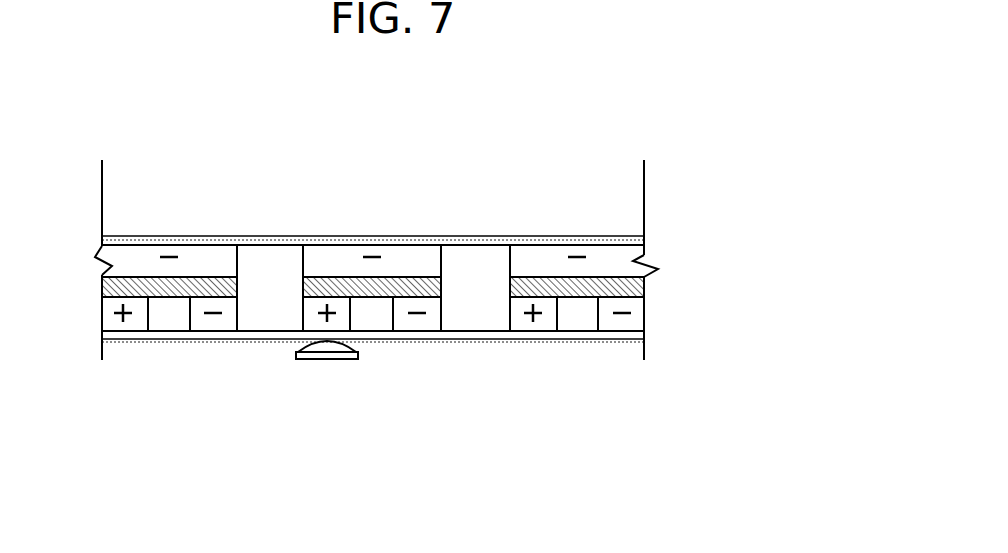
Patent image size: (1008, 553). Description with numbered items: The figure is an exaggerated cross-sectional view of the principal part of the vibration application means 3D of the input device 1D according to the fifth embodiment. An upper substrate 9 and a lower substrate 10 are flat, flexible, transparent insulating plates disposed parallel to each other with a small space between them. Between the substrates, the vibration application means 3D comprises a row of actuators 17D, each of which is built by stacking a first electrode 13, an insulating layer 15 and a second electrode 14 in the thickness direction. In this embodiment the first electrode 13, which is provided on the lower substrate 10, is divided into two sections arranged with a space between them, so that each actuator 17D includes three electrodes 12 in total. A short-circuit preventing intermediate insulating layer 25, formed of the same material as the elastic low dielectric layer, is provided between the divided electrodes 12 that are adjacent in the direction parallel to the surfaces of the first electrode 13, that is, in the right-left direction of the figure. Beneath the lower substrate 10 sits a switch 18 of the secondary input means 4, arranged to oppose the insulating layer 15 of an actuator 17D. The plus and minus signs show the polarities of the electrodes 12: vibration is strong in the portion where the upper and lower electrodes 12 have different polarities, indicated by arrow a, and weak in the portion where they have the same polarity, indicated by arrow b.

The input device 1D is at (288, 212).
The vibration application means 3D is at (468, 233).
The upper substrate 9 is at (630, 238).
The second electrode 14 is at (496, 221).
The insulating layer 15 is at (645, 283).
The first electrode 13 is at (520, 325).
The electrodes 12 is at (496, 339).
The actuator 17D is at (496, 336).
The lower substrate 10 is at (632, 340).
The switch 18 is at (386, 401).
The secondary input means 4 is at (327, 362).
The intermediate insulating layer 25 is at (578, 325).
The arrow a is at (533, 280).
The arrow b is at (616, 280).